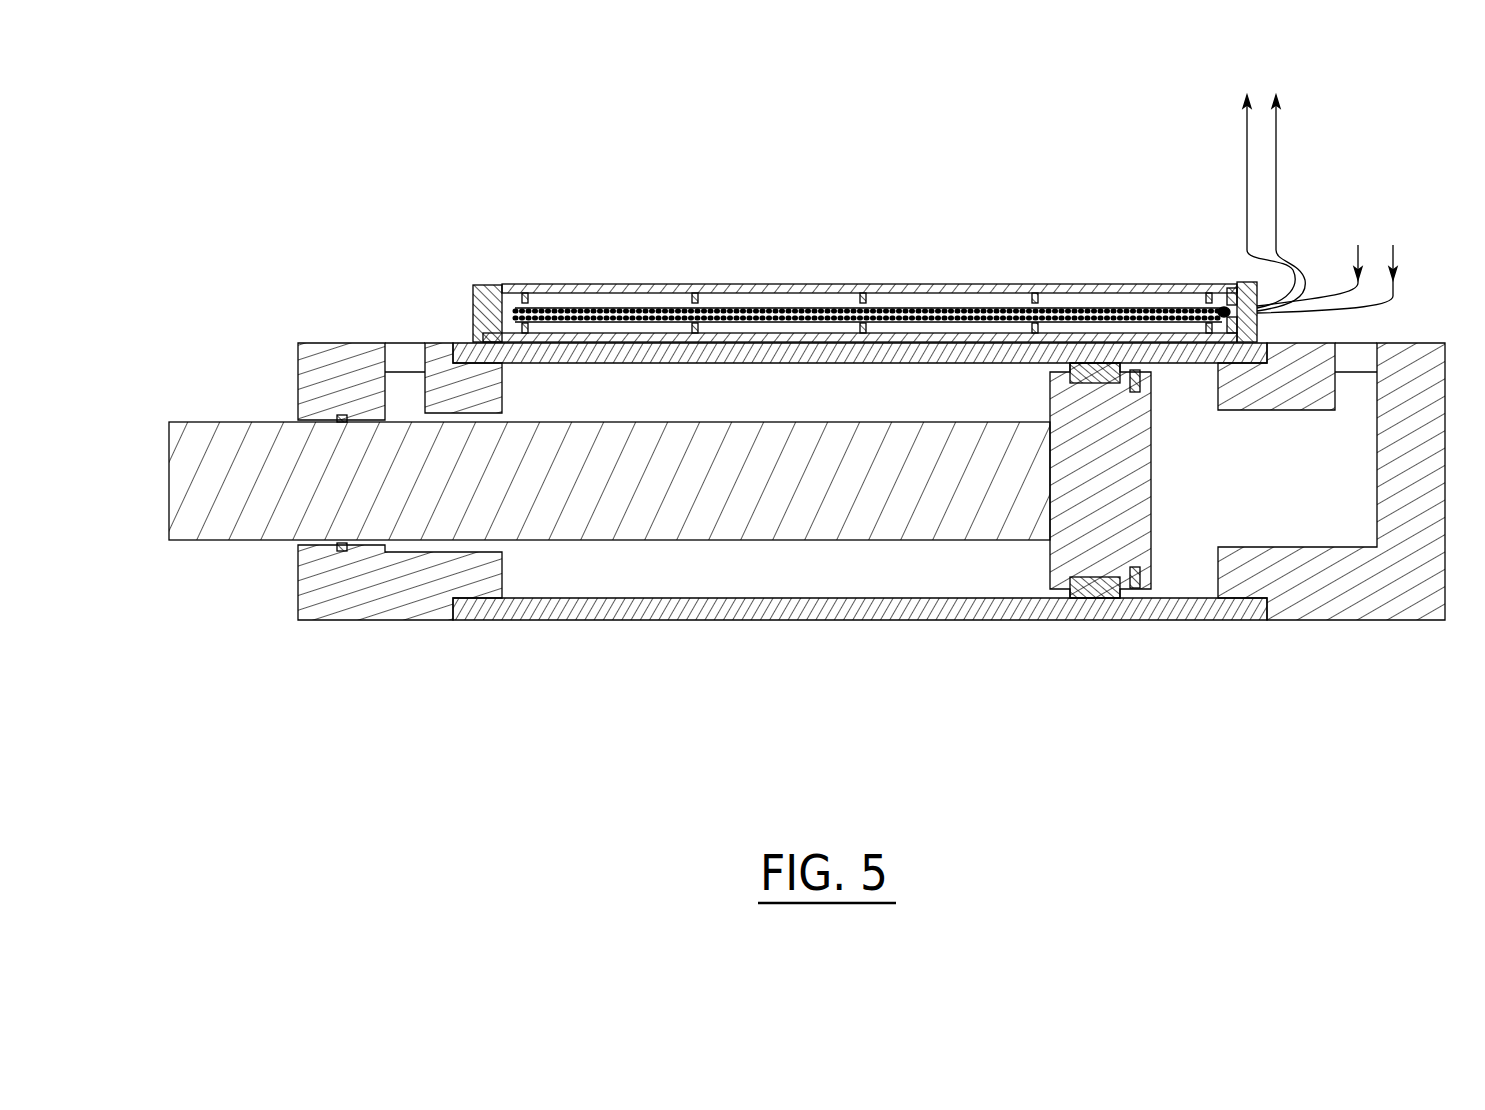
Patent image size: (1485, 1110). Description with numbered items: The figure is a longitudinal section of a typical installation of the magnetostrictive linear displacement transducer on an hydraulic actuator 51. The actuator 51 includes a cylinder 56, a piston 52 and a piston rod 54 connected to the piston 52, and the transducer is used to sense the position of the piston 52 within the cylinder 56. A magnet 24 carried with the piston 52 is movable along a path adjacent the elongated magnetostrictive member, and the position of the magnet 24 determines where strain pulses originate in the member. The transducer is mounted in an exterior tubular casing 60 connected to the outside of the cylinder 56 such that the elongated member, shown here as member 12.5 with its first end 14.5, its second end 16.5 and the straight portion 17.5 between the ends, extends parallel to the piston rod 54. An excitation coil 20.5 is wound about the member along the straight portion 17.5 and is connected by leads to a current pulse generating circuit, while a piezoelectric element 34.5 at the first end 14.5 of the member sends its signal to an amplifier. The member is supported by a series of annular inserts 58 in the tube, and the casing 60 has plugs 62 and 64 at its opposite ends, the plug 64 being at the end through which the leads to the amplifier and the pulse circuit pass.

The hydraulic actuator 51 is at (580, 633).
The piston rod 54 is at (776, 542).
The piston 52 is at (1050, 567).
The cylinder 56 is at (1224, 620).
The magnet 24 is at (1135, 367).
The plug 62 is at (473, 305).
The exterior tubular casing 60 is at (720, 284).
The transducer housing 16.5 is at (503, 292).
The spacer 20.5 is at (685, 307).
The annular inserts 58 is at (862, 298).
The coil 17.5 is at (875, 307).
The waveguide 12.5 is at (1067, 306).
The waveguide end 14.5 is at (1228, 305).
The end termination block 34.5 is at (1225, 309).
The plug 64 is at (1258, 322).